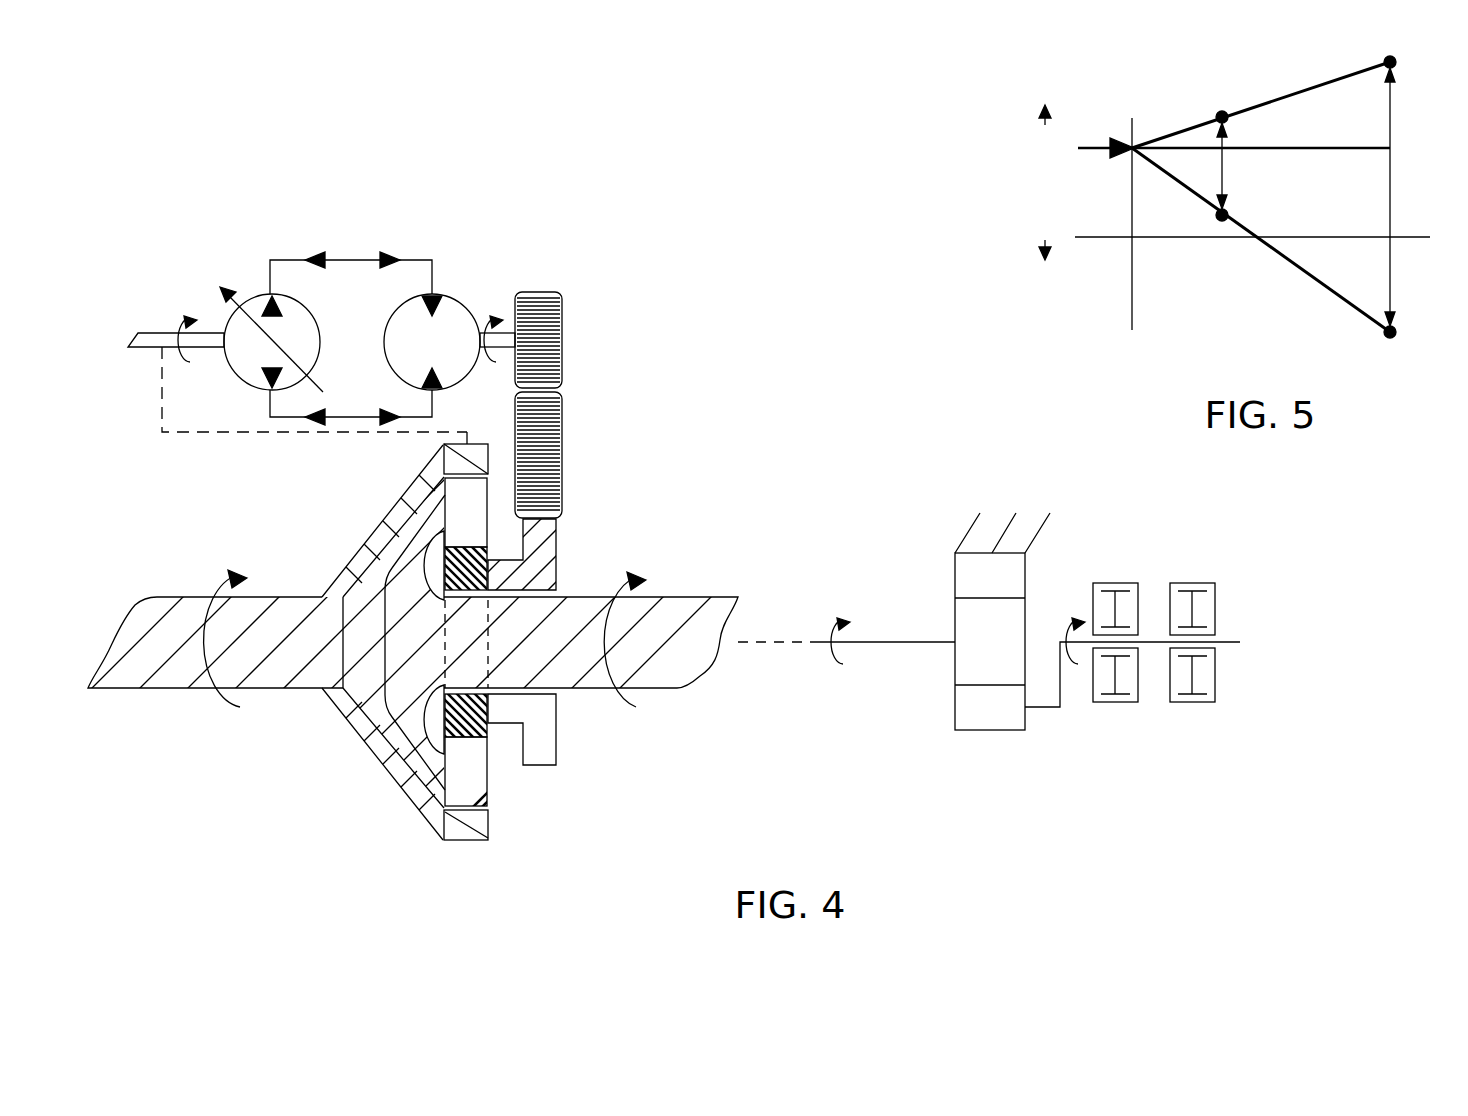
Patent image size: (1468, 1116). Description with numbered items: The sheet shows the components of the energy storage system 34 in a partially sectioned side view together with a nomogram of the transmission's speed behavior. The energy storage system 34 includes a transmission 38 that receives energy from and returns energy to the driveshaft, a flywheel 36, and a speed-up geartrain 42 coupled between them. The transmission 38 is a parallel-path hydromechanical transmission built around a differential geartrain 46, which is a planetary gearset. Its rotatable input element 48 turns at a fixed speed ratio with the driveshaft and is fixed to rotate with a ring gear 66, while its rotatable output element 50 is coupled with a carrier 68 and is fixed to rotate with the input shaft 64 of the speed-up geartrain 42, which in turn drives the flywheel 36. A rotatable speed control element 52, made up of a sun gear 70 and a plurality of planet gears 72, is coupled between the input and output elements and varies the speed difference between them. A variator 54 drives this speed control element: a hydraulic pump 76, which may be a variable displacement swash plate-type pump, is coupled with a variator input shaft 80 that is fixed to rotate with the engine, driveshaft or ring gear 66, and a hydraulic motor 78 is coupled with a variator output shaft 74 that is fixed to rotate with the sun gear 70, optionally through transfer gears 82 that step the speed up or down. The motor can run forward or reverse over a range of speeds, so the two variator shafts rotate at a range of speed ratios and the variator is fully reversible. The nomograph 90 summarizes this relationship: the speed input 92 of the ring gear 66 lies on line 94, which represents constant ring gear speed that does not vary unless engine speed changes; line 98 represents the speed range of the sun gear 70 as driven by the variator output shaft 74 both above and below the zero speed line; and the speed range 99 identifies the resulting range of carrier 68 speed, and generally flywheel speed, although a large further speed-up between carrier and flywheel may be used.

In FIG. 4, the energy storage system 34 is at (710, 310).
In FIG. 4, the flywheel 36 is at (1130, 722).
In FIG. 4, the transmission 38 is at (632, 498).
In FIG. 4, the speed-up geartrain 42 is at (988, 731).
In FIG. 4, the differential geartrain 46 is at (328, 702).
In FIG. 4, the rotatable input element 48 is at (172, 594).
In FIG. 4, the rotatable output element 50 is at (708, 597).
In FIG. 4, the rotatable speed control element 52 is at (575, 650).
In FIG. 4, the variator 54 is at (304, 309).
In FIG. 4, the input shaft 64 is at (895, 641).
In FIG. 4, the ring gear 66 is at (466, 841).
In FIG. 4, the carrier 68 is at (400, 638).
In FIG. 4, the sun gear 70 is at (556, 553).
In FIG. 4, the planet gears 72 is at (444, 483).
In FIG. 4, the variator output shaft 74 is at (490, 322).
In FIG. 4, the hydraulic pump 76 is at (266, 293).
In FIG. 4, the hydraulic motor 78 is at (452, 293).
In FIG. 4, the variator input shaft 80 is at (208, 332).
In FIG. 4, the transfer gears 82 is at (580, 398).
In FIG. 5, the nomograph 90 is at (1243, 179).
In FIG. 5, the speed input 92 is at (1098, 147).
In FIG. 5, the line 94 is at (1326, 147).
In FIG. 5, the line 98 is at (1391, 176).
In FIG. 5, the speed range 99 is at (1223, 176).